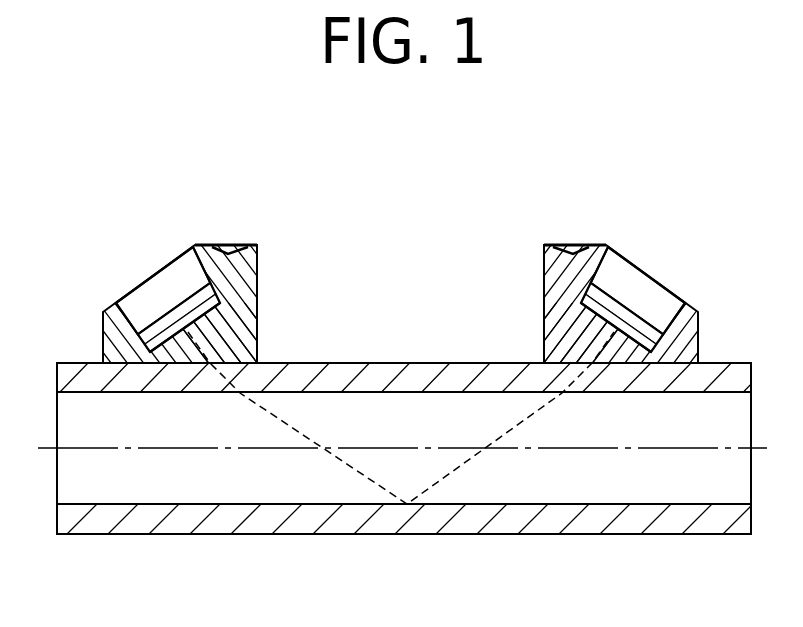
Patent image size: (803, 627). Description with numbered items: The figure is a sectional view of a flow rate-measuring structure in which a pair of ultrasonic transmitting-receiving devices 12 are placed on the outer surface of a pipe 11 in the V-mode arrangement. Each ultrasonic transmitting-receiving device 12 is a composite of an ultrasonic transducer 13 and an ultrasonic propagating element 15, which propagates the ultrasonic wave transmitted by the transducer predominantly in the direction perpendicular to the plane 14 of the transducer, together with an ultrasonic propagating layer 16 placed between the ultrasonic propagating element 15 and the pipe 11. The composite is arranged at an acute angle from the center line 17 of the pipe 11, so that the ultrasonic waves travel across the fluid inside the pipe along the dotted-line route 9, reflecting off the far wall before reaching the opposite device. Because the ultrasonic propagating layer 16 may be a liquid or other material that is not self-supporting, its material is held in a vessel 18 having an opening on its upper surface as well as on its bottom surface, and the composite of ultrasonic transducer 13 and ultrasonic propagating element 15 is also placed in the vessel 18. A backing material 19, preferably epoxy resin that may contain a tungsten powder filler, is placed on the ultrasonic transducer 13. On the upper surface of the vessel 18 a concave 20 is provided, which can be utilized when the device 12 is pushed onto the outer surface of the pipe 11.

The route 9 is at (350, 467).
The pipe 11 is at (722, 373).
The ultrasonic transmitting-receiving device 12 is at (401, 256).
The ultrasonic transducer 13 is at (208, 295).
The plane of the transducer 14 is at (172, 333).
The ultrasonic propagating element 15 is at (220, 304).
The ultrasonic propagating layer 16 is at (220, 342).
The center line 17 is at (43, 447).
The vessel 18 is at (242, 268).
The backing material 19 is at (168, 280).
The concave 20 is at (224, 246).